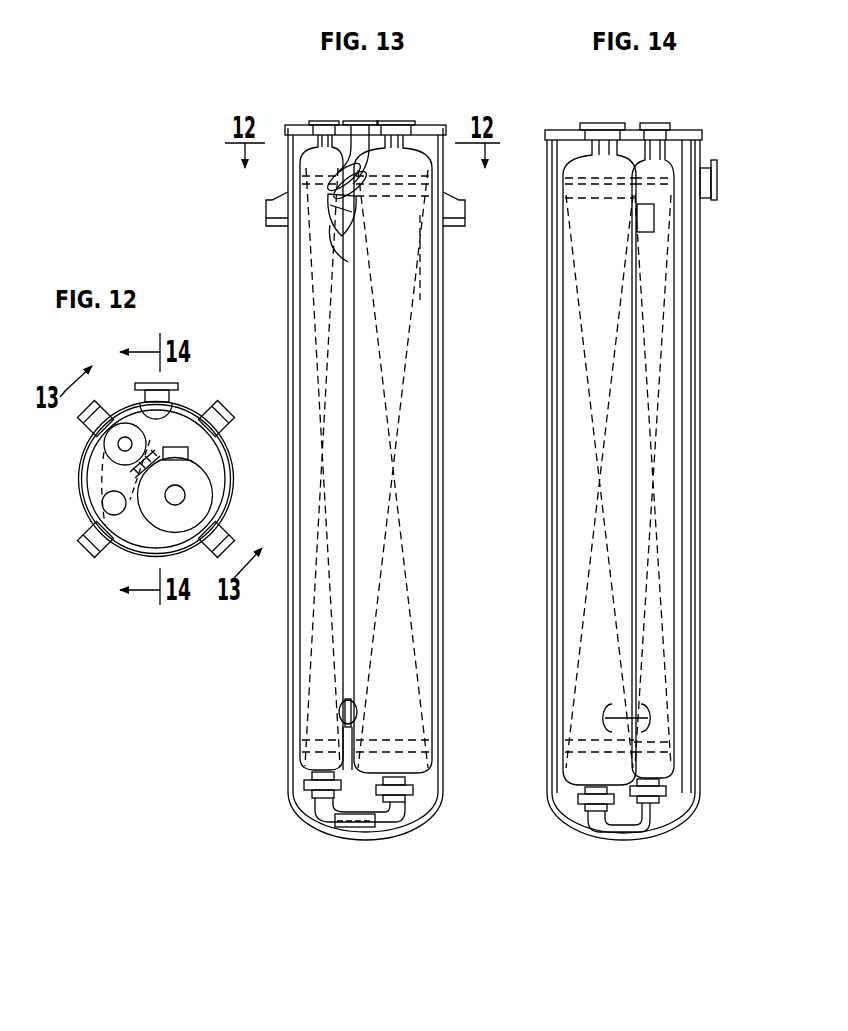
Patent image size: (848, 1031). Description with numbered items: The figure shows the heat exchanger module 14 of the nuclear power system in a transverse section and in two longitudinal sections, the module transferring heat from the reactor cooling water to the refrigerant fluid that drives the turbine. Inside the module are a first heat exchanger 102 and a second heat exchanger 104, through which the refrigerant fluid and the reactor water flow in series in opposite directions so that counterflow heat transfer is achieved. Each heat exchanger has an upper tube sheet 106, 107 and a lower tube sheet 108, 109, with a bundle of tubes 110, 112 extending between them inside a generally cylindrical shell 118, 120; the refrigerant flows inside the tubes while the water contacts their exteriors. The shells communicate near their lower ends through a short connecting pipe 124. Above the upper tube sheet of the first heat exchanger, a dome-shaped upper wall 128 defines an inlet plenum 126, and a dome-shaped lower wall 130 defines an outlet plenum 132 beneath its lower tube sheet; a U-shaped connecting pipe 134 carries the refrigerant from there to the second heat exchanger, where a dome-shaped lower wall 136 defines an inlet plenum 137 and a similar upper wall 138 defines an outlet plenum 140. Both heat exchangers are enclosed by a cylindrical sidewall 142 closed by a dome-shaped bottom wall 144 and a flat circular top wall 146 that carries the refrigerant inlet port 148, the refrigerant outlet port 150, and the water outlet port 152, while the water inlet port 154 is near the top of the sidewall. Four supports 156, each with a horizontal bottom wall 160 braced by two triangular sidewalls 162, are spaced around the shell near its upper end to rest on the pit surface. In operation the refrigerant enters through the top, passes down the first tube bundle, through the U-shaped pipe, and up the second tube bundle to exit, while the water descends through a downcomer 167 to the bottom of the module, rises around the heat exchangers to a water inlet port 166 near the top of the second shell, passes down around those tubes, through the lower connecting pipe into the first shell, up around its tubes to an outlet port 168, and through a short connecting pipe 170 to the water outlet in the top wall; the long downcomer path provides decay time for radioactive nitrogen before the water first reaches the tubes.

In FIG. 12, the heat exchanger module 14 is at (76, 486).
In FIG. 13, the heat exchanger module 14 is at (310, 840).
In FIG. 14, the heat exchanger module 14 is at (595, 848).
In FIG. 12, the first heat exchanger 102 is at (103, 450).
In FIG. 13, the first heat exchanger 102 is at (294, 668).
In FIG. 14, the first heat exchanger 102 is at (688, 332).
In FIG. 12, the second heat exchanger 104 is at (205, 488).
In FIG. 13, the second heat exchanger 104 is at (432, 497).
In FIG. 14, the second heat exchanger 104 is at (564, 410).
In FIG. 13, the upper tube sheet 106 is at (305, 240).
In FIG. 14, the upper tube sheet 106 is at (665, 207).
In FIG. 13, the upper tube sheet 107 is at (428, 240).
In FIG. 14, the upper tube sheet 107 is at (599, 462).
In FIG. 13, the lower tube sheet 108 is at (280, 740).
In FIG. 14, the lower tube sheet 108 is at (690, 738).
In FIG. 13, the lower tube sheet 109 is at (428, 735).
In FIG. 14, the lower tube sheet 109 is at (568, 724).
In FIG. 13, the tube bundle 110 is at (290, 333).
In FIG. 14, the tube bundle 110 is at (685, 367).
In FIG. 13, the tube bundle 112 is at (432, 322).
In FIG. 14, the tube bundle 112 is at (572, 293).
In FIG. 13, the shell 118 is at (298, 357).
In FIG. 14, the shell 118 is at (690, 412).
In FIG. 13, the shell 120 is at (442, 390).
In FIG. 14, the shell 120 is at (560, 348).
In FIG. 13, the connecting pipe 124 is at (356, 715).
In FIG. 14, the connecting pipe 124 is at (650, 710).
In FIG. 13, the inlet plenum 126 is at (298, 160).
In FIG. 14, the inlet plenum 126 is at (665, 165).
In FIG. 13, the upper wall 128 is at (297, 162).
In FIG. 13, the lower wall 130 is at (285, 790).
In FIG. 13, the outlet plenum 132 is at (302, 768).
In FIG. 13, the U-shaped connecting pipe 134 is at (355, 823).
In FIG. 13, the lower wall 136 is at (414, 786).
In FIG. 13, the inlet plenum 137 is at (405, 770).
In FIG. 13, the upper wall 138 is at (412, 170).
In FIG. 13, the outlet plenum 140 is at (422, 178).
In FIG. 12, the sidewall 142 is at (222, 448).
In FIG. 13, the sidewall 142 is at (445, 286).
In FIG. 14, the sidewall 142 is at (549, 262).
In FIG. 13, the bottom wall 144 is at (405, 836).
In FIG. 14, the bottom wall 144 is at (670, 830).
In FIG. 13, the top wall 146 is at (292, 128).
In FIG. 14, the top wall 146 is at (682, 130).
In FIG. 12, the inlet port 148 is at (120, 444).
In FIG. 13, the inlet port 148 is at (318, 122).
In FIG. 14, the inlet port 148 is at (660, 123).
In FIG. 12, the outlet port 150 is at (167, 498).
In FIG. 13, the outlet port 150 is at (392, 122).
In FIG. 14, the outlet port 150 is at (603, 123).
In FIG. 12, the outlet port 152 is at (110, 505).
In FIG. 13, the outlet port 152 is at (353, 122).
In FIG. 12, the inlet port 154 is at (170, 388).
In FIG. 14, the inlet port 154 is at (718, 180).
In FIG. 12, the supports 156 is at (222, 410).
In FIG. 13, the supports 156 is at (270, 212).
In FIG. 12, the bottom wall 160 is at (205, 555).
In FIG. 13, the bottom wall 160 is at (273, 222).
In FIG. 12, the sidewalls 162 is at (222, 545).
In FIG. 13, the sidewalls 162 is at (270, 198).
In FIG. 12, the water inlet port 166 is at (184, 447).
In FIG. 14, the water inlet port 166 is at (640, 213).
In FIG. 12, the downcomer 167 is at (133, 415).
In FIG. 14, the downcomer 167 is at (688, 282).
In FIG. 13, the outlet port 168 is at (352, 242).
In FIG. 13, the connecting pipe 170 is at (356, 205).